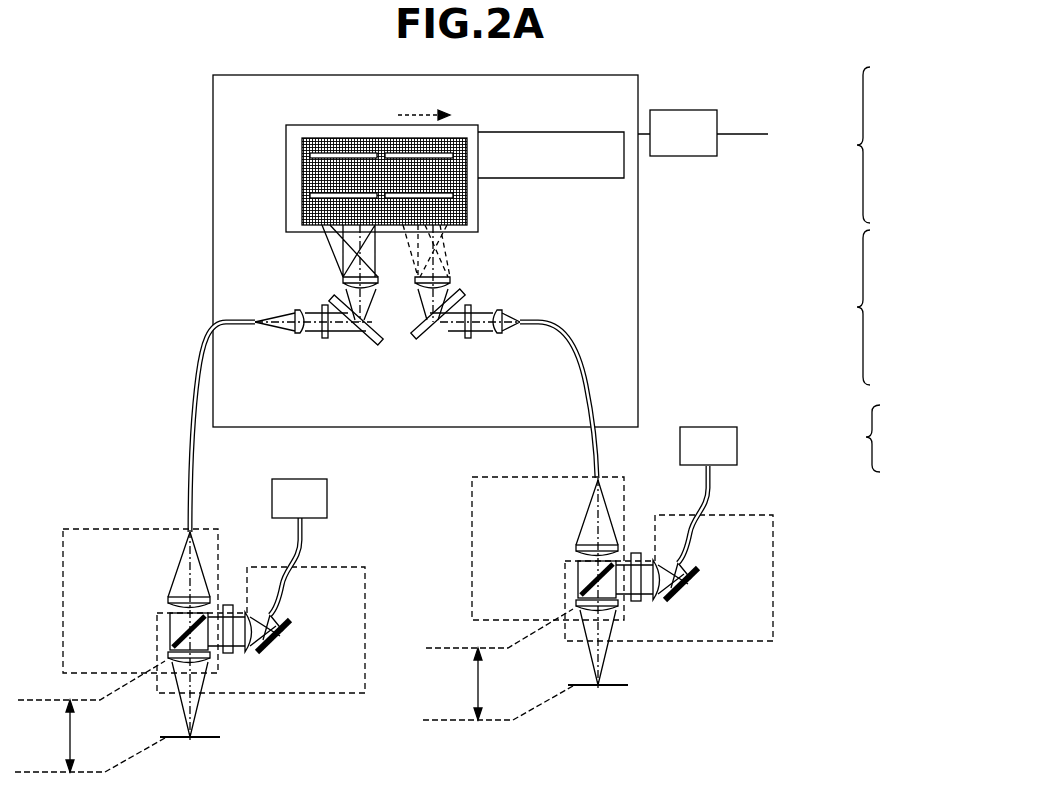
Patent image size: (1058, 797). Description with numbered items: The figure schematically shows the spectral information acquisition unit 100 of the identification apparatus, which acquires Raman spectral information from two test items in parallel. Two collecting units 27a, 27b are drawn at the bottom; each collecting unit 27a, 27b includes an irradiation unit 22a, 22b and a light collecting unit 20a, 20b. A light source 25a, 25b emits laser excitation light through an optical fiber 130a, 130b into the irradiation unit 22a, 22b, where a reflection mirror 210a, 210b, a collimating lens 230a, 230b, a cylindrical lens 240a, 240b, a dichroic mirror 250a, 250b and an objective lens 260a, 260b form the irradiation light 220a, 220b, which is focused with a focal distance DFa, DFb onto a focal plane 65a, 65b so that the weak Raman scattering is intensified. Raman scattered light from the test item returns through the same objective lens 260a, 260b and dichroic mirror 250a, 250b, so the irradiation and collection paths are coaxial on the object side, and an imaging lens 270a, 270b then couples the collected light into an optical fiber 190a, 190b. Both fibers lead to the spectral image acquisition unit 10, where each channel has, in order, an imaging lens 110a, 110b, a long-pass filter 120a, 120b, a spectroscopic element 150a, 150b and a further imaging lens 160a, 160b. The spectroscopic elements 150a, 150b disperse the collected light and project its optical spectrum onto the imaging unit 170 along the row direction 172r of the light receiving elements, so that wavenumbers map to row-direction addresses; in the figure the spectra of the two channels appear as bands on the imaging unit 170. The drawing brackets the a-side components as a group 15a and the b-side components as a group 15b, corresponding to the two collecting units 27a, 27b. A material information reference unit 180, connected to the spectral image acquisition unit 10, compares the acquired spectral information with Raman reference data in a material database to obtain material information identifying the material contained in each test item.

The spectral information acquisition unit 100 is at (150, 93).
The spectral image acquisition unit 10 is at (213, 258).
The imaging unit 170 is at (376, 125).
The row direction 172r is at (422, 104).
The imaging lens 160a is at (343, 280).
The imaging lens 160b is at (447, 278).
The spectroscopic element 150a is at (383, 343).
The spectroscopic element 150b is at (462, 296).
The long-pass filter 120a is at (325, 340).
The long-pass filter 120b is at (472, 312).
The imaging lens 110a is at (297, 338).
The imaging lens 110b is at (497, 338).
The optical fiber 190a is at (193, 385).
The optical fiber 190b is at (604, 334).
The material information reference unit 180 is at (717, 120).
The optical unit a 15a is at (863, 307).
The optical unit b 15b is at (864, 145).
The light collecting unit 20a is at (135, 606).
The irradiation unit 22a is at (283, 634).
The collecting unit 27a is at (231, 603).
The light source 25a is at (300, 479).
The optical fiber 130a is at (292, 552).
The imaging lens 270a is at (168, 603).
The dichroic mirror 250a is at (172, 632).
The objective lens 260a is at (170, 657).
The reflection mirror 210a is at (316, 605).
The collimating lens 230a is at (256, 648).
The cylindrical lens 240a is at (229, 653).
The irradiation light 220a is at (180, 700).
The focal plane 65a is at (214, 732).
The focal distance DFa is at (90, 716).
The light collecting unit 20b is at (665, 547).
The irradiation unit 22b is at (712, 544).
The collecting unit 27b is at (703, 546).
The light source 25b is at (683, 465).
The optical fiber 130b is at (710, 500).
The imaging lens 270b is at (576, 551).
The dichroic mirror 250b is at (580, 580).
The objective lens 260b is at (578, 605).
The reflection mirror 210b is at (724, 552).
The collimating lens 230b is at (664, 596).
The cylindrical lens 240b is at (637, 601).
The irradiation light 220b is at (588, 648).
The focal plane 65b is at (621, 672).
The focal distance DFb is at (496, 664).